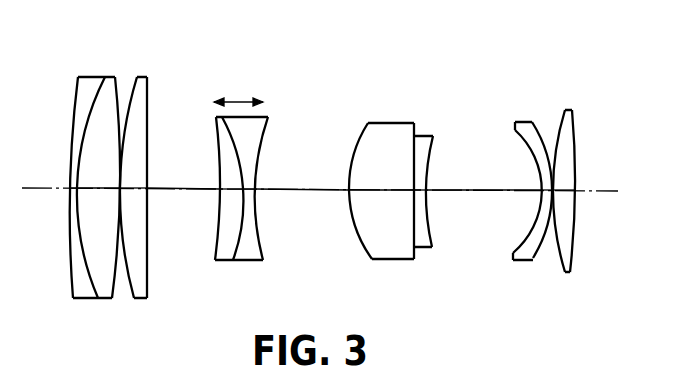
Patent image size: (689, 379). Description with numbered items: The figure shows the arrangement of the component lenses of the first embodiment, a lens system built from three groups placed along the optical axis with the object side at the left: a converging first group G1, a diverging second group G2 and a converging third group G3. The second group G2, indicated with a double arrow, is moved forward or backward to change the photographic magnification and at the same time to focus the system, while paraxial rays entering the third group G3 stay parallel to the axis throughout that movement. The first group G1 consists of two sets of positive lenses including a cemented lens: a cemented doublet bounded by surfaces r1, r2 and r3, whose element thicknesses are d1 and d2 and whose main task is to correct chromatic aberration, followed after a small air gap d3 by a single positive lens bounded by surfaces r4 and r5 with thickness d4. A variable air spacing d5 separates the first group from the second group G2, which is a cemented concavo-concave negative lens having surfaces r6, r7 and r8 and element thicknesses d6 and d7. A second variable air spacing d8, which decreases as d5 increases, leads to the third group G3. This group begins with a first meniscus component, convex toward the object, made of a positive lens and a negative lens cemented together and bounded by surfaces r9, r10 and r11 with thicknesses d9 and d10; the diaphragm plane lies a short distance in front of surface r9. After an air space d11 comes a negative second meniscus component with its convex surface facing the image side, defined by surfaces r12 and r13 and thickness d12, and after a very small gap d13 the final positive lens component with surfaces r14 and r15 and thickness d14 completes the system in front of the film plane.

The converging first lens group G1 is at (165, 61).
The diverging second lens group G2 is at (205, 99).
The converging third lens group G3 is at (598, 104).
The first lens surface r1 is at (72, 290).
The second lens surface r2 is at (92, 298).
The third lens surface r3 is at (111, 299).
The fourth lens surface r4 is at (133, 298).
The fifth lens surface r5 is at (149, 297).
The sixth lens surface r6 is at (215, 258).
The seventh lens surface r7 is at (234, 260).
The eighth lens surface r8 is at (263, 258).
The ninth lens surface r9 is at (366, 255).
The tenth lens surface r10 is at (411, 247).
The eleventh lens surface r11 is at (436, 245).
The twelfth lens surface r12 is at (510, 251).
The thirteenth lens surface r13 is at (544, 245).
The fourteenth lens surface r14 is at (558, 263).
The fifteenth lens surface r15 is at (576, 263).
The center thickness of first lens d1 is at (73, 186).
The center thickness of second lens d2 is at (98, 178).
The air spacing between cemented lens and second positive lens d3 is at (105, 205).
The center thickness of third lens d4 is at (136, 191).
The variable air spacing between first and second groups d5 is at (183, 180).
The center thickness of fourth lens d6 is at (222, 186).
The center thickness of fifth lens d7 is at (251, 186).
The variable air spacing between second and third groups d8 is at (302, 178).
The center thickness of sixth lens d9 is at (381, 180).
The center thickness of seventh lens d10 is at (418, 199).
The air spacing between first and second meniscus components d11 is at (484, 180).
The center thickness of eighth lens d12 is at (543, 198).
The air spacing between second meniscus and positive lens component d13 is at (557, 188).
The center thickness of ninth lens d14 is at (567, 190).